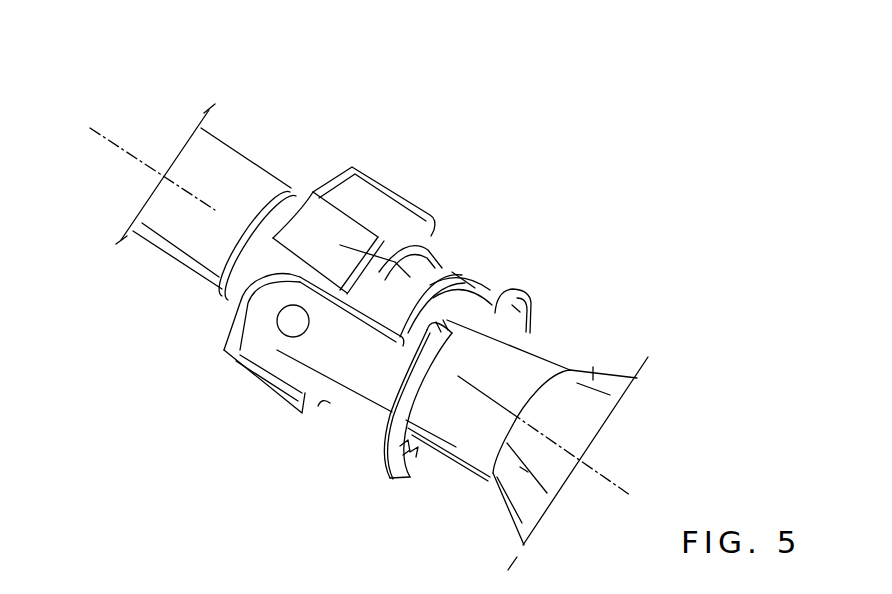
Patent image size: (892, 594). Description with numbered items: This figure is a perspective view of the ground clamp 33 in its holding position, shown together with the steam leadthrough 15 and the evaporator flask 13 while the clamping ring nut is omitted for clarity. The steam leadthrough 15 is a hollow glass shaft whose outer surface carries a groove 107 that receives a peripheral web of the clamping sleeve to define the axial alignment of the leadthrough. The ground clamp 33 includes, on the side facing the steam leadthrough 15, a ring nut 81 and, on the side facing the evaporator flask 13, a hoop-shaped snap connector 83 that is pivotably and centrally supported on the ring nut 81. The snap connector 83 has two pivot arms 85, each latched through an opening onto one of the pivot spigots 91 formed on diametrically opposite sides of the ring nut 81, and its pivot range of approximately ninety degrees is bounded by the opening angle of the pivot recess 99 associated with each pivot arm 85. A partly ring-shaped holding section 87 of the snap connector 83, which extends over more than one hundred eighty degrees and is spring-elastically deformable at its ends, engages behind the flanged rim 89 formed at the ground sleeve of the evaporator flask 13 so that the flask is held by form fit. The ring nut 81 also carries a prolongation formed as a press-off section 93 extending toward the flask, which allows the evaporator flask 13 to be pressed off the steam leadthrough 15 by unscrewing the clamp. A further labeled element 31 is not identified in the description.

The evaporator flask 13 is at (600, 369).
The steam leadthrough 15 is at (166, 207).
The tube end 31 is at (118, 136).
The ground clamp 33 is at (658, 145).
The ring nut 81 is at (343, 190).
The snap connector 83 is at (338, 438).
The pivot arms 85 is at (459, 262).
The holding section 87 is at (404, 469).
The flanged rim 89 is at (485, 282).
The pivot spigots 91 is at (286, 321).
The press-off section 93 is at (429, 244).
The pivot recess 99 is at (263, 359).
The groove 107 is at (228, 276).